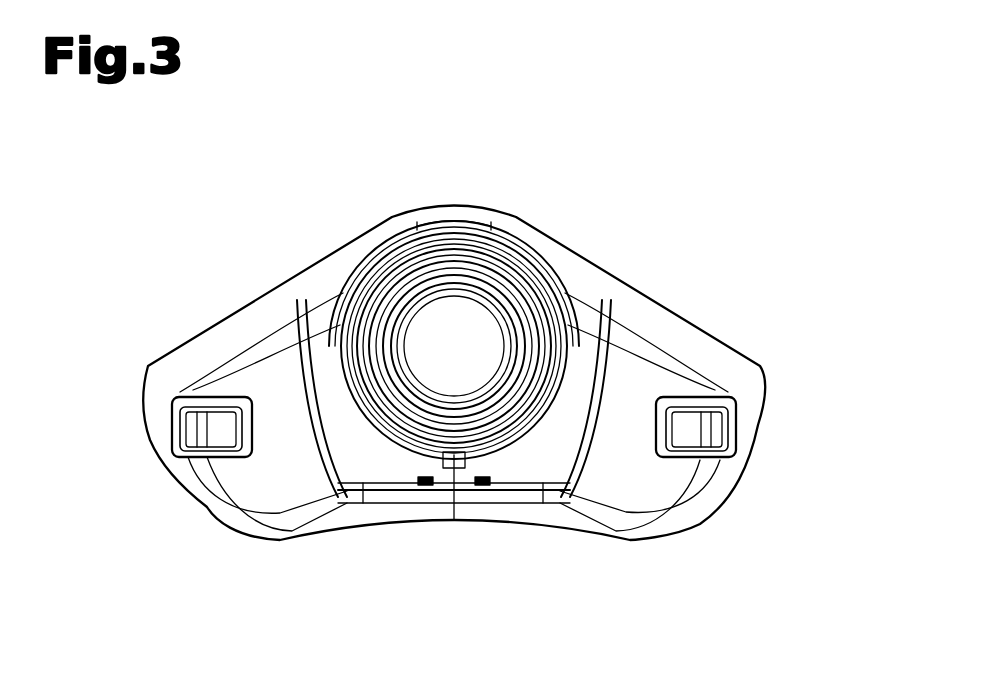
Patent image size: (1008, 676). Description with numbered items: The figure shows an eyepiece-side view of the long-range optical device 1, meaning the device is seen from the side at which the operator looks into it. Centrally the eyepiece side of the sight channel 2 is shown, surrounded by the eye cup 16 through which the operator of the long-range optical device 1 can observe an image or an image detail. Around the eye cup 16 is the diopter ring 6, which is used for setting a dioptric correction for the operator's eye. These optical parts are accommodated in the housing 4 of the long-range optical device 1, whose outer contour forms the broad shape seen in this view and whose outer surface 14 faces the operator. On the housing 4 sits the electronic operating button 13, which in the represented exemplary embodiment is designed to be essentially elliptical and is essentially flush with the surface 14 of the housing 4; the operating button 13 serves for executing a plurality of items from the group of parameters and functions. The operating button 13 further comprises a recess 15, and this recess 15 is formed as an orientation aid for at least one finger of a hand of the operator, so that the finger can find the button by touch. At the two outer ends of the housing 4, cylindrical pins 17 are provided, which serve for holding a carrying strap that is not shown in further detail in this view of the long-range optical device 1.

The long-range optical device 1 is at (800, 117).
The sight channel 2 is at (467, 313).
The housing 4 is at (253, 308).
The diopter ring 6 is at (563, 295).
The operating button 13 is at (477, 207).
The surface 14 is at (283, 284).
The recess 15 is at (445, 222).
The eye cup 16 is at (497, 307).
The cylindrical pins 17 is at (194, 432).